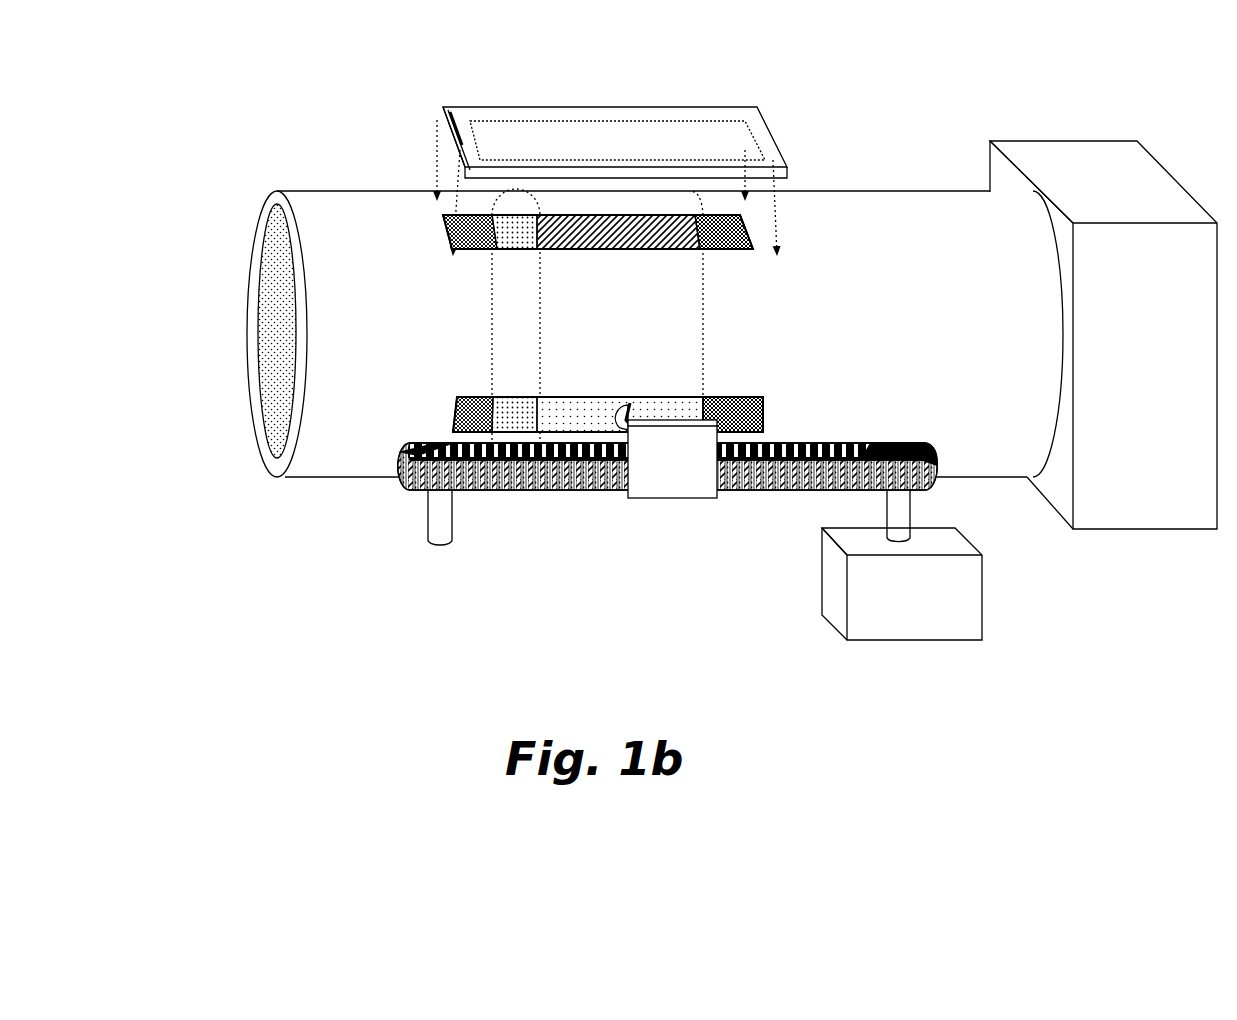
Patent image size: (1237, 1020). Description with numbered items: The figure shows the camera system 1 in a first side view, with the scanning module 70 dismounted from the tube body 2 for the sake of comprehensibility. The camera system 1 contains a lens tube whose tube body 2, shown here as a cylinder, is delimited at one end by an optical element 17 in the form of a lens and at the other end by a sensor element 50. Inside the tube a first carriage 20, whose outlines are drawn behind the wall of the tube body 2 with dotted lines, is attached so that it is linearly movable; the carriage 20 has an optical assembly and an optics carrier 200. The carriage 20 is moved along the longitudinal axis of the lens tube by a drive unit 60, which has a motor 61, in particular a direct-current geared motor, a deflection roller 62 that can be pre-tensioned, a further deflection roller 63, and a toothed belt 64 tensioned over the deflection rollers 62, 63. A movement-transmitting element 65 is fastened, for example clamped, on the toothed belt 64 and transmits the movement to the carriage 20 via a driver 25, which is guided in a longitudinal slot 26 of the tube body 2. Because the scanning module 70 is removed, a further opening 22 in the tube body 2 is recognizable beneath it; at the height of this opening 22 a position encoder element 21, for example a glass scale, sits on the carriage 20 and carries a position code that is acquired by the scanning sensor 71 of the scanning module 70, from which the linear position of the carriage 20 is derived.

The camera system 1 is at (340, 160).
The tube body 2 is at (285, 197).
The optical element 17 is at (277, 415).
The first carriage 20 is at (470, 320).
The position encoder element 21 is at (583, 236).
The further opening 22 is at (727, 240).
The driver 25 is at (636, 418).
The longitudinal slot 26 is at (740, 395).
The optics carrier 200 is at (572, 412).
The sensor element 50 is at (1060, 155).
The drive unit 60 is at (658, 594).
The motor 61 is at (866, 620).
The deflection roller 62 is at (935, 478).
The further deflection roller 63 is at (410, 482).
The toothed belt 64 is at (540, 477).
The movement-transmitting element 65 is at (640, 497).
The scanning module 70 is at (770, 135).
The scanning sensor 71 is at (478, 140).